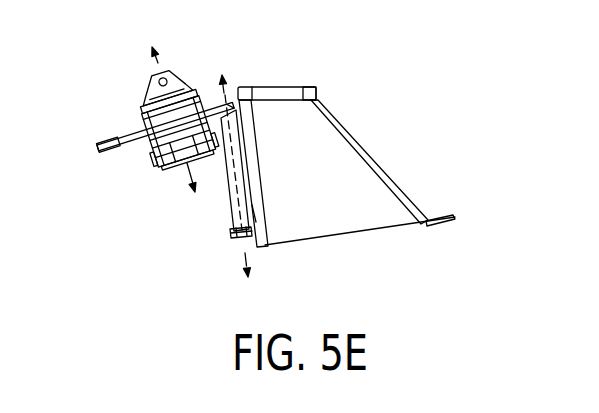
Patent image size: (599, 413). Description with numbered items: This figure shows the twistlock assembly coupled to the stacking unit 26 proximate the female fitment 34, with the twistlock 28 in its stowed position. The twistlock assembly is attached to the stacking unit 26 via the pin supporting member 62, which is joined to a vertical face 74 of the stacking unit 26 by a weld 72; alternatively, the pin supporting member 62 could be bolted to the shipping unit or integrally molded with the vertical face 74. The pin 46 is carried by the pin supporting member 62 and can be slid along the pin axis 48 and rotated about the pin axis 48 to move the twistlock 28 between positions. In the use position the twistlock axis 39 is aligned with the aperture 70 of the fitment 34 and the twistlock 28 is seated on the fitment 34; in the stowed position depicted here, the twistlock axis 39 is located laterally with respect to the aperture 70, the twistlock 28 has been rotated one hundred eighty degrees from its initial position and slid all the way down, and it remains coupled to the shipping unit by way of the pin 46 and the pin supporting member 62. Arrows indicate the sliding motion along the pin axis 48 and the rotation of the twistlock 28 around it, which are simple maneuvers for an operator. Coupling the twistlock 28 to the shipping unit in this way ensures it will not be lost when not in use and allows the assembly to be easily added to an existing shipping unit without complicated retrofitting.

The twistlock 28 is at (130, 107).
The twistlock axis 39 is at (166, 70).
The aperture 70 is at (275, 78).
The female fitment 34 is at (318, 92).
The stacking unit 26 is at (389, 152).
The pin 46 is at (252, 207).
The weld 72 is at (243, 128).
The pin supporting member 62 is at (227, 163).
The vertical face 74 is at (256, 221).
The pin axis 48 is at (244, 241).